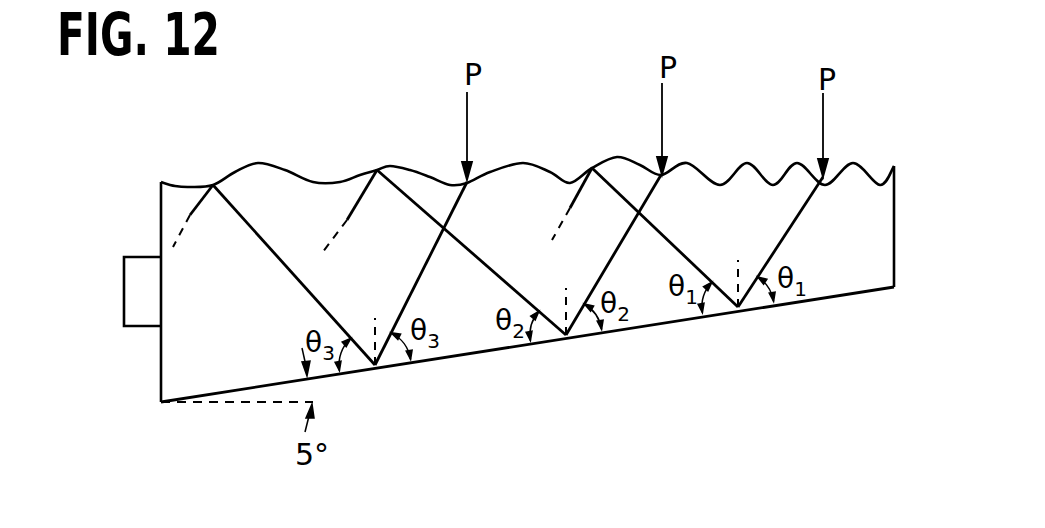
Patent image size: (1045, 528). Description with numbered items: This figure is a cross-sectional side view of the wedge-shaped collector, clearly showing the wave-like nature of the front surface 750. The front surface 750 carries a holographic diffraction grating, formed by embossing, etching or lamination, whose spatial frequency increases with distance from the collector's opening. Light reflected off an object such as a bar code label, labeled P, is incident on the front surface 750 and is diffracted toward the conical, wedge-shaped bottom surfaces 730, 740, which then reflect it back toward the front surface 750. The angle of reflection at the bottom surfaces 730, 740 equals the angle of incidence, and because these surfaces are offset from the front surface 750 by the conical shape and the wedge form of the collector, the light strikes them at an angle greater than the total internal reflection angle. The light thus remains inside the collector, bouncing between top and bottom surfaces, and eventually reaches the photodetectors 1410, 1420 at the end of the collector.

The front surface 750 is at (300, 183).
The back surface 730 is at (527, 344).
The back surface 740 is at (660, 323).
The photodetector 1410 is at (84, 336).
The photodetector 1420 is at (124, 310).